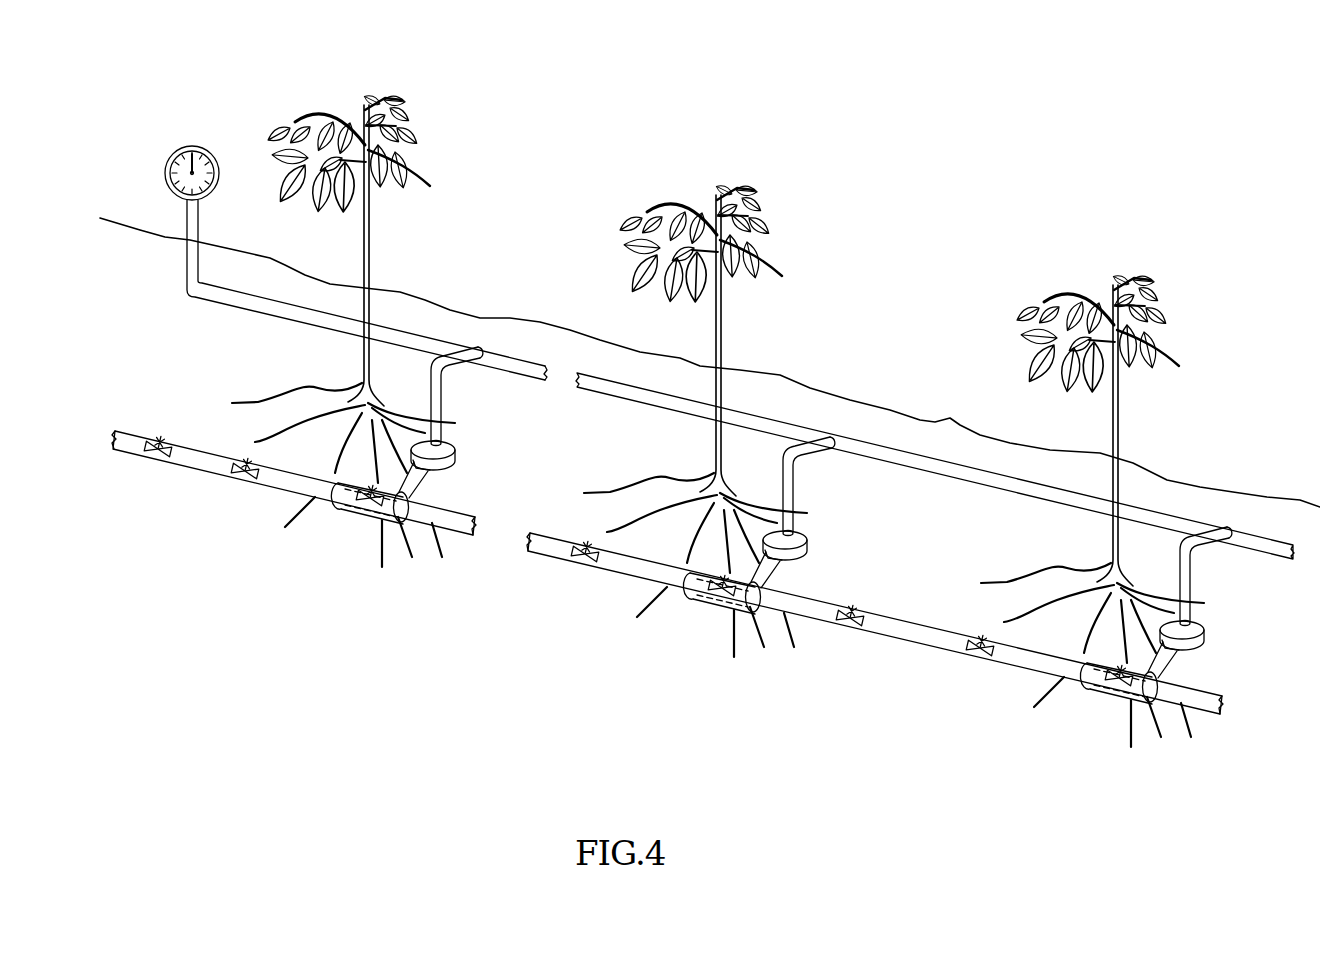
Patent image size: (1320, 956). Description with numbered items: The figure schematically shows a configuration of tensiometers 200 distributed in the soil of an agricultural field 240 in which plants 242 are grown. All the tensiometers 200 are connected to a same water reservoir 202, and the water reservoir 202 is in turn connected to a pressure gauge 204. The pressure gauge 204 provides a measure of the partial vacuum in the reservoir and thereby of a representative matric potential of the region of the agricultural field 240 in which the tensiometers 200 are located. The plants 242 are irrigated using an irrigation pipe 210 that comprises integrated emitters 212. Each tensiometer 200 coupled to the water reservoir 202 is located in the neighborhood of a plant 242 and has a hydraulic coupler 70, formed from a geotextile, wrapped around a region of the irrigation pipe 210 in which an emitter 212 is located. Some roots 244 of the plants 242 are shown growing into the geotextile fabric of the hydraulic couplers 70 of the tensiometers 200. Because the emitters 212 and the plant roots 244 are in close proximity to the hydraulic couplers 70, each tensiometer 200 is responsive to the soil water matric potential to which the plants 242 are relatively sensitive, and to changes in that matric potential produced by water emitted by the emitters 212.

The pressure gauge 204 is at (178, 147).
The water reservoir 202 is at (931, 462).
The agricultural field 240 is at (825, 375).
The plants 242 is at (740, 316).
The irrigation pipe 210 is at (182, 481).
The emitters 212 is at (717, 592).
The roots 244 is at (342, 464).
The hydraulic coupler 70 is at (407, 513).
The tensiometers 200 is at (463, 477).